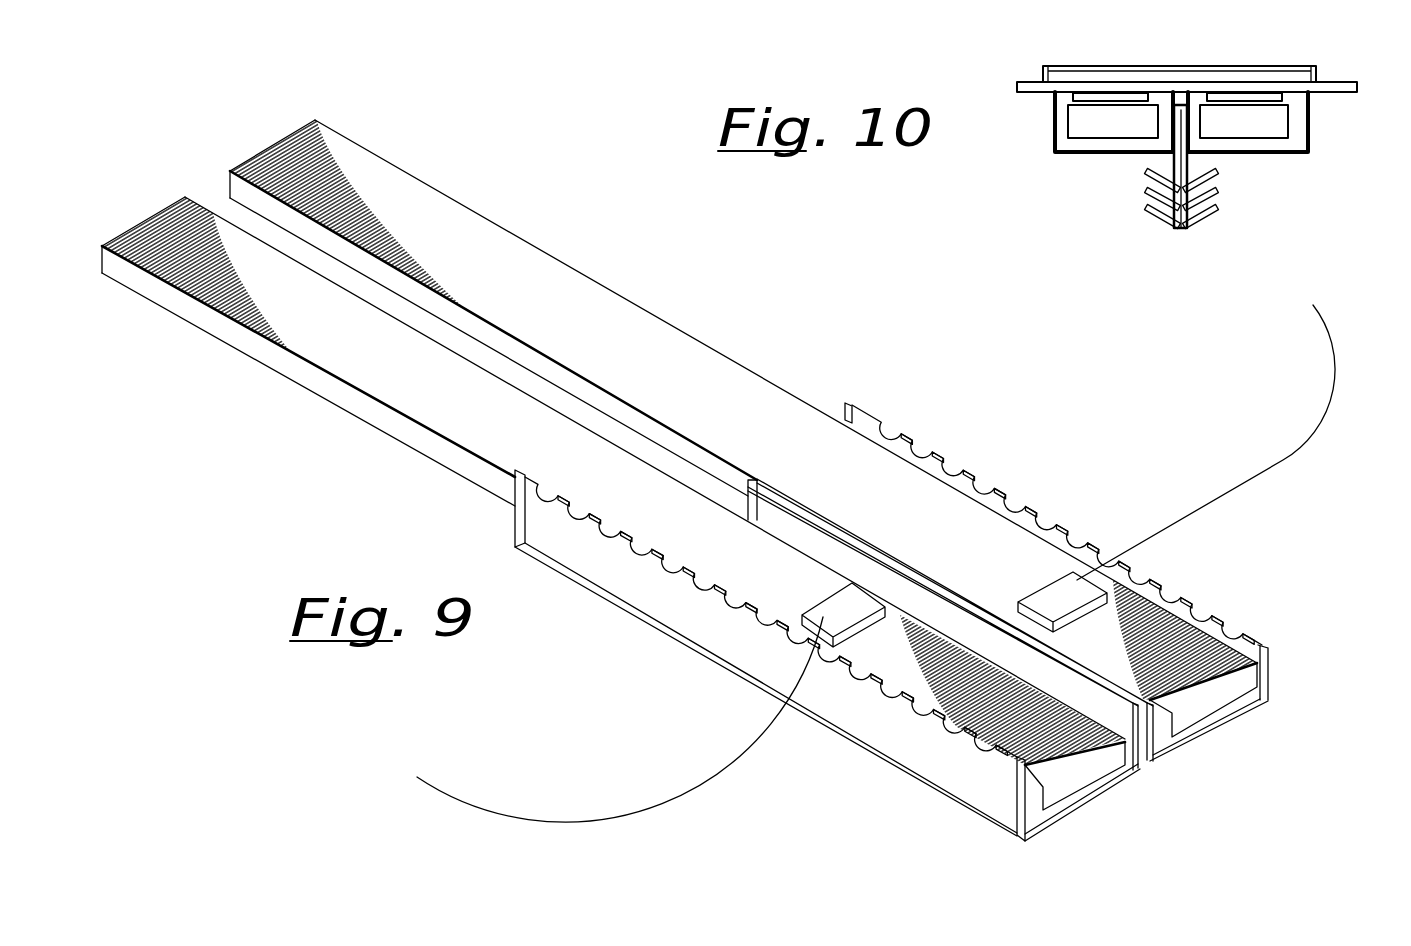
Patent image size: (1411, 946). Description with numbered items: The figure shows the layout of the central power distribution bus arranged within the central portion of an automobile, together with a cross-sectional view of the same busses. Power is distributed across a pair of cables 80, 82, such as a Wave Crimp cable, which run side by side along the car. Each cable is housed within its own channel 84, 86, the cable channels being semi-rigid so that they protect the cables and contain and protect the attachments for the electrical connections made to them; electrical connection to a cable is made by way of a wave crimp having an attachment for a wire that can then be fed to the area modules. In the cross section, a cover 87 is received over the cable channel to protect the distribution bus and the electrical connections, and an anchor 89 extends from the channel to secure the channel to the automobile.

In FIG. 9, the cable 80 is at (680, 342).
In FIG. 10, the cable 80 is at (1273, 118).
In FIG. 9, the cable 82 is at (518, 433).
In FIG. 10, the cable 82 is at (1075, 122).
In FIG. 9, the channel 84 is at (1217, 730).
In FIG. 10, the channel 84 is at (1253, 153).
In FIG. 9, the channel 86 is at (1025, 817).
In FIG. 10, the channel 86 is at (1107, 153).
In FIG. 10, the cover 87 is at (1300, 62).
In FIG. 10, the anchor 89 is at (1190, 224).